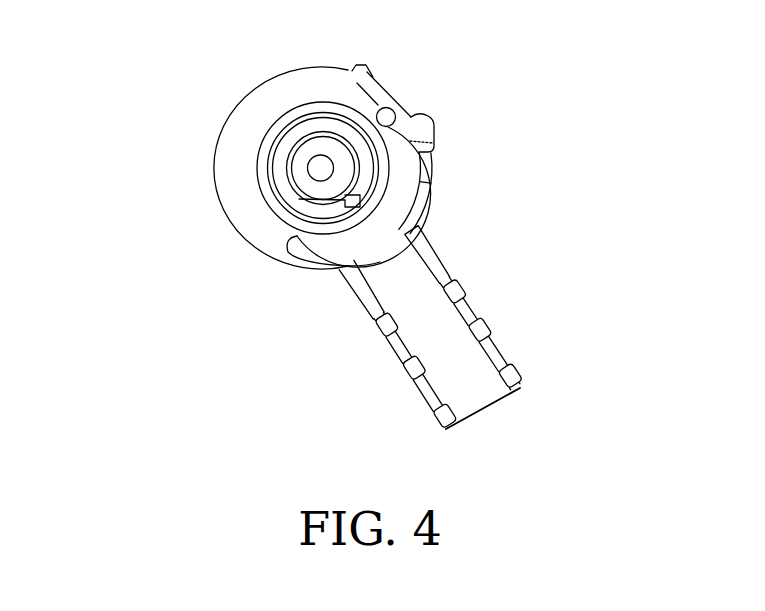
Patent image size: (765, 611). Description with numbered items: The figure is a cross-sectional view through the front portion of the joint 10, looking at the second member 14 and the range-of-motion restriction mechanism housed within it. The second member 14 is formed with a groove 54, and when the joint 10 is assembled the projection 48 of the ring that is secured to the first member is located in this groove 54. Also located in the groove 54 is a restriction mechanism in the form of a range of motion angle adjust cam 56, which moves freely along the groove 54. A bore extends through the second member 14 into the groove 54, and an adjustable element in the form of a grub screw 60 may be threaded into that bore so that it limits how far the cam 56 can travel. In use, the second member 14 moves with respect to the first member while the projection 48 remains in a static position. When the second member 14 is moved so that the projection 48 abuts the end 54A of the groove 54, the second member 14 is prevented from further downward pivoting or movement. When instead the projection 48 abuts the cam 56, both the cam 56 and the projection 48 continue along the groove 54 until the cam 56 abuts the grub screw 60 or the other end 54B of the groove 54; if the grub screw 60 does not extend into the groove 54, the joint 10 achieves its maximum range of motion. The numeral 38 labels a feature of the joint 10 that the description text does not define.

The joint 10 is at (178, 103).
The second member 14 is at (470, 283).
The inner ring tab 38 is at (348, 203).
The projection 48 is at (313, 243).
The groove 54 is at (388, 226).
The end of groove 54A is at (288, 250).
The other end of groove 54B is at (382, 105).
The range of motion angle adjust cam 56 is at (437, 133).
The grub screw 60 is at (369, 79).